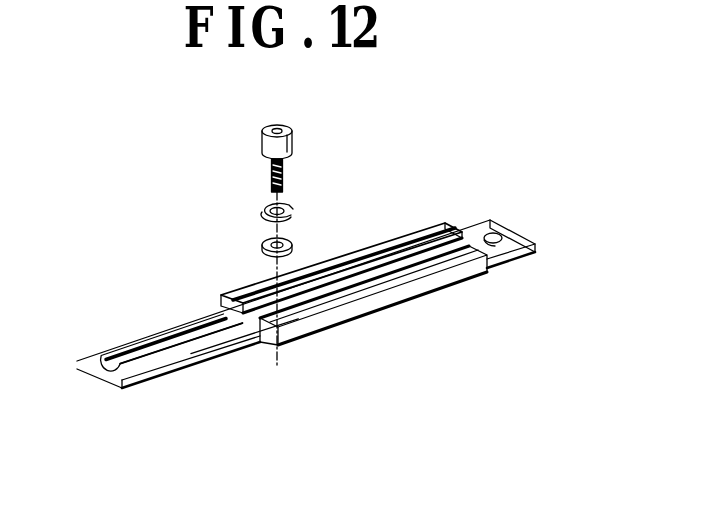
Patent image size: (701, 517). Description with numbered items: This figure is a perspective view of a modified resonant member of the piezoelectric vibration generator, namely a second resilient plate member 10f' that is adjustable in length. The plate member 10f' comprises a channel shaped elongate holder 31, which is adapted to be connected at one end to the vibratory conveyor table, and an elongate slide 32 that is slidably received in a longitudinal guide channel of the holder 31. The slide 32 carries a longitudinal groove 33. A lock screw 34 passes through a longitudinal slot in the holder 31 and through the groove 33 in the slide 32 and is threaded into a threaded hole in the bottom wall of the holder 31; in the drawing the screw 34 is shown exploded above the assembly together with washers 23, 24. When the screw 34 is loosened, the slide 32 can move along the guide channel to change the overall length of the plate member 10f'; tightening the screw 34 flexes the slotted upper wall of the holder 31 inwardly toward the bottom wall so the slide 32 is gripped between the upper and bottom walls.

The second resilient plate member 10f' is at (341, 235).
The channel shaped elongate holder 31 is at (431, 287).
The elongate slide 32 is at (105, 357).
The longitudinal groove 33 is at (149, 358).
The lock screw 34 is at (262, 136).
The lock washer 23 is at (262, 212).
The washer 24 is at (262, 246).